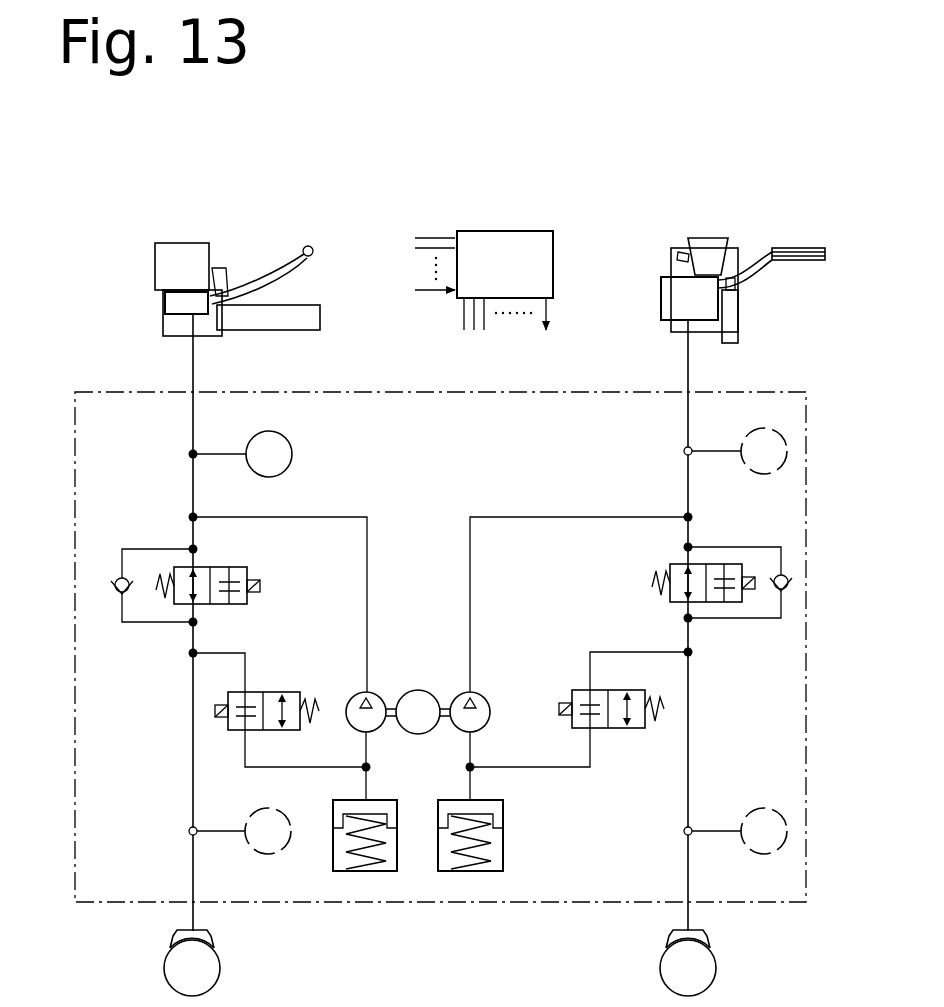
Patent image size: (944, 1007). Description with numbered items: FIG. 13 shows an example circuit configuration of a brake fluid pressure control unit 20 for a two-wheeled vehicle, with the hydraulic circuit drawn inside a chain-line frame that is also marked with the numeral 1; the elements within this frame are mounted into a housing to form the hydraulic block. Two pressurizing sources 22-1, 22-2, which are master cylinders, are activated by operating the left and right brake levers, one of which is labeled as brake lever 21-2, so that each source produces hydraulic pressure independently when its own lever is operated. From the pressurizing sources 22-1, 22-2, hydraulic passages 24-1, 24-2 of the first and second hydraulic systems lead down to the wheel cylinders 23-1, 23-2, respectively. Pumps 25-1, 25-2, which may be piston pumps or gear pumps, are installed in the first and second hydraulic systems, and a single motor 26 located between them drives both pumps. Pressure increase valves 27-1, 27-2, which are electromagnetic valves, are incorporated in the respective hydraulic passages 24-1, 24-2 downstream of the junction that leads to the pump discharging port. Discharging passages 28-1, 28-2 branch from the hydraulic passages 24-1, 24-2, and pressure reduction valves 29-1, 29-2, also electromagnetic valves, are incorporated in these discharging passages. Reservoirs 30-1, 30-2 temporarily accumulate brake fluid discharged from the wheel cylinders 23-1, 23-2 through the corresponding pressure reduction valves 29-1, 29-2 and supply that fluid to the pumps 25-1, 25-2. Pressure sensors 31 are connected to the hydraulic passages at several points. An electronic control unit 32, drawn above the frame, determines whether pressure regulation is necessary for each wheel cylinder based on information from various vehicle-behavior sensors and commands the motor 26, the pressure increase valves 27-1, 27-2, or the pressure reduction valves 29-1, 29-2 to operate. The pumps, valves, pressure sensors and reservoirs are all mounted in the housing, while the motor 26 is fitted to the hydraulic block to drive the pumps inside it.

The brake system 1 is at (798, 386).
The brake fluid pressure control unit 20 is at (810, 505).
The brake lever 21-2 is at (783, 206).
The pressurizing source 22-1 is at (675, 297).
The pressurizing source 22-2 is at (165, 297).
The wheel cylinder 23-1 is at (703, 934).
The wheel cylinder 23-2 is at (208, 934).
The hydraulic passage 24-1 is at (691, 370).
The hydraulic passage 24-2 is at (191, 372).
The pump 25-1 is at (490, 695).
The pump 25-2 is at (378, 695).
The motor 26 is at (418, 735).
The pressure increase valve 27-1 is at (726, 606).
The pressure increase valve 27-2 is at (172, 606).
The discharging passage 28-1 is at (630, 650).
The discharging passage 28-2 is at (232, 650).
The pressure reduction valve 29-1 is at (636, 731).
The pressure reduction valve 29-2 is at (299, 690).
The reservoir 30-1 is at (503, 852).
The reservoir 30-2 is at (333, 838).
The pressure sensor 31 is at (275, 429).
The electronic control unit 32 is at (521, 233).